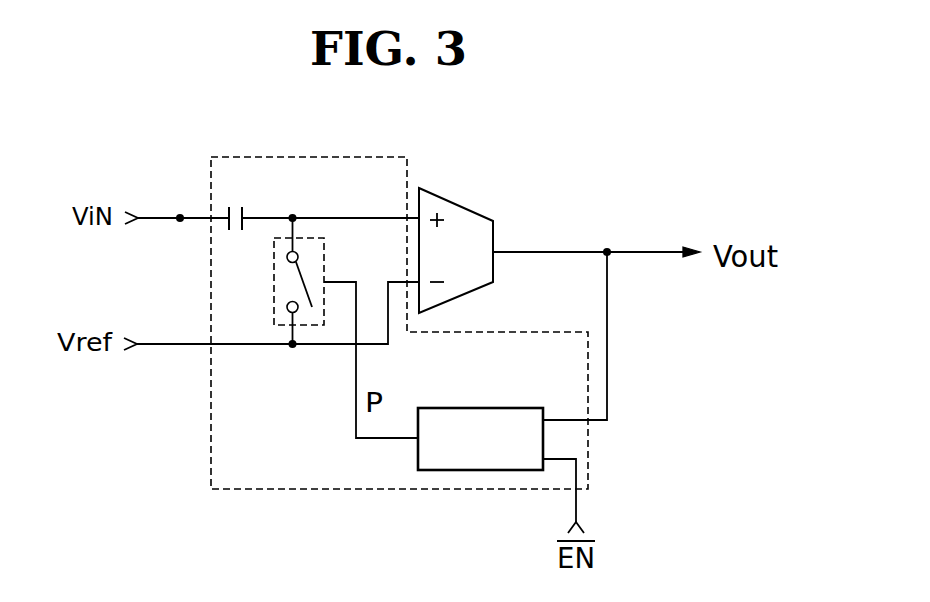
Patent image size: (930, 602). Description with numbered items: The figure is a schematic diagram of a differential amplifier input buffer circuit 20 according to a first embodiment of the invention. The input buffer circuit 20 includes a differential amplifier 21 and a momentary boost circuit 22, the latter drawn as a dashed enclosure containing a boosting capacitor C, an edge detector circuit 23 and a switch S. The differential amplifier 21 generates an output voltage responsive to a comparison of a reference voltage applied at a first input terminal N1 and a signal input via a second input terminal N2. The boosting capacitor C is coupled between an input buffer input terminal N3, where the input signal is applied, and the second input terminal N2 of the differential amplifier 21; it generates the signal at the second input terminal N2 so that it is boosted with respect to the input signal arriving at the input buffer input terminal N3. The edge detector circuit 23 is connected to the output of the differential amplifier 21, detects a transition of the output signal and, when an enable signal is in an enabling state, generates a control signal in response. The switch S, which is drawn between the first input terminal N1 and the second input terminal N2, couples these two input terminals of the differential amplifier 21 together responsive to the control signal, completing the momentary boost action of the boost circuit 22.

The input buffer circuit 20 is at (633, 158).
The differential amplifier 21 is at (455, 197).
The momentary boost circuit 22 is at (268, 490).
The edge detector circuit 23 is at (482, 408).
The boosting capacitor C is at (235, 205).
The switch S is at (273, 282).
The first input terminal N1 is at (291, 358).
The second input terminal N2 is at (291, 202).
The input buffer input terminal N3 is at (178, 202).